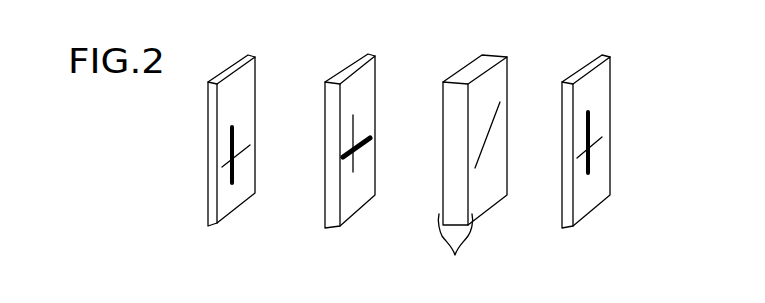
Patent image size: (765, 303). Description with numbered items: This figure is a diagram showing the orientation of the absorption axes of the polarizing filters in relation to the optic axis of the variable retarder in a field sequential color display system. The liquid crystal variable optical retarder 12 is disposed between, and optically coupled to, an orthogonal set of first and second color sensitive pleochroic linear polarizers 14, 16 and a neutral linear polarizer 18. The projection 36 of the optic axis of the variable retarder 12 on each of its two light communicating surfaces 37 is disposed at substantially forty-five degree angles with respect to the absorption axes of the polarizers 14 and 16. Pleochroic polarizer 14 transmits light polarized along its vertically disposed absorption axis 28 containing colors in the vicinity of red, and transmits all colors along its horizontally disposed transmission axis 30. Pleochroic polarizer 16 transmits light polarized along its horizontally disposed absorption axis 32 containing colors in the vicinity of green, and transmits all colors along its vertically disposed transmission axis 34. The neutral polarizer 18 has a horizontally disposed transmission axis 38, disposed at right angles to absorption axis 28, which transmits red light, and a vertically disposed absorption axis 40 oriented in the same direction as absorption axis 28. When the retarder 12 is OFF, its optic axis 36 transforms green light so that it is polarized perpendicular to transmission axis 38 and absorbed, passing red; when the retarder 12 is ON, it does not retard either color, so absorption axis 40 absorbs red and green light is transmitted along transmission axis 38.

The liquid crystal variable optical retarder 12 is at (470, 73).
The first color sensitive pleochroic linear polarizer 14 is at (232, 70).
The second color sensitive pleochroic linear polarizer 16 is at (352, 70).
The neutral linear polarizer 18 is at (585, 72).
The absorption axis 28 is at (230, 142).
The transmission axis 30 is at (240, 152).
The absorption axis 32 is at (358, 134).
The transmission axis 34 is at (355, 127).
The optic axis projection 36 is at (497, 111).
The light communicating surfaces 37 is at (455, 246).
The transmission axis 38 is at (597, 143).
The absorption axis 40 is at (586, 129).